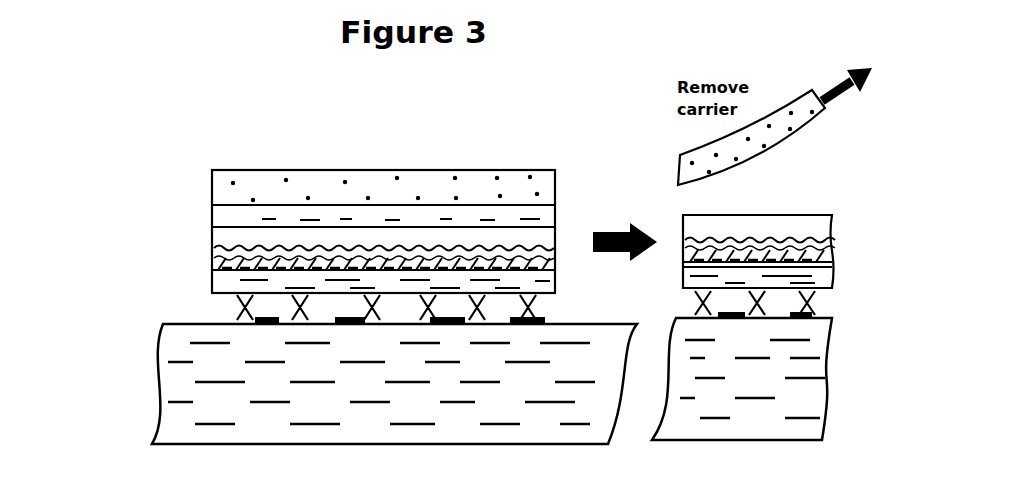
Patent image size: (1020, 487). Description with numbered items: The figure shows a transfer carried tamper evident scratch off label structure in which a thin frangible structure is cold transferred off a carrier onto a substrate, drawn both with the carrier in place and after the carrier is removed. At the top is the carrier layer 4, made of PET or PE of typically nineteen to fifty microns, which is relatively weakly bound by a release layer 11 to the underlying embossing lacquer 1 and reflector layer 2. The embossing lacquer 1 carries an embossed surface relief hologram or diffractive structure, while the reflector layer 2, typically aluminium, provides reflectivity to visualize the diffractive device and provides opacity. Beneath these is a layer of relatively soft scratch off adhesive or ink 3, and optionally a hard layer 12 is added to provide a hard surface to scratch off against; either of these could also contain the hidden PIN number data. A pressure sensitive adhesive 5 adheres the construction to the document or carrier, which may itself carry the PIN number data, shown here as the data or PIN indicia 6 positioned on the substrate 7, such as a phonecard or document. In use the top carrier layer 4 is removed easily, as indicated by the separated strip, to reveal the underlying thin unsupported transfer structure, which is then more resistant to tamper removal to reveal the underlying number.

The embossing lacquer 1 is at (212, 235).
The reflector layer 2 is at (212, 251).
The scratch off adhesive 3 is at (215, 268).
The carrier layer 4 is at (265, 193).
The pressure sensitive adhesive 5 is at (232, 311).
The data or PIN indicia 6 is at (250, 321).
The substrate 7 is at (205, 371).
The release layer 11 is at (260, 217).
The hard layer 12 is at (218, 290).